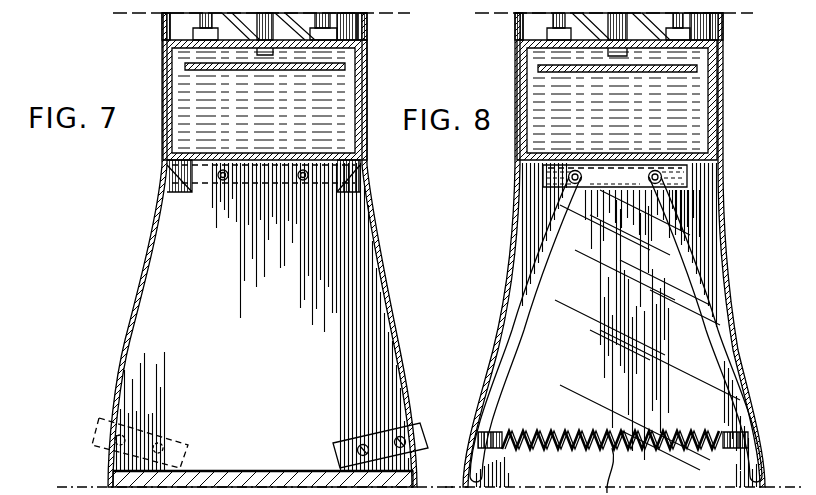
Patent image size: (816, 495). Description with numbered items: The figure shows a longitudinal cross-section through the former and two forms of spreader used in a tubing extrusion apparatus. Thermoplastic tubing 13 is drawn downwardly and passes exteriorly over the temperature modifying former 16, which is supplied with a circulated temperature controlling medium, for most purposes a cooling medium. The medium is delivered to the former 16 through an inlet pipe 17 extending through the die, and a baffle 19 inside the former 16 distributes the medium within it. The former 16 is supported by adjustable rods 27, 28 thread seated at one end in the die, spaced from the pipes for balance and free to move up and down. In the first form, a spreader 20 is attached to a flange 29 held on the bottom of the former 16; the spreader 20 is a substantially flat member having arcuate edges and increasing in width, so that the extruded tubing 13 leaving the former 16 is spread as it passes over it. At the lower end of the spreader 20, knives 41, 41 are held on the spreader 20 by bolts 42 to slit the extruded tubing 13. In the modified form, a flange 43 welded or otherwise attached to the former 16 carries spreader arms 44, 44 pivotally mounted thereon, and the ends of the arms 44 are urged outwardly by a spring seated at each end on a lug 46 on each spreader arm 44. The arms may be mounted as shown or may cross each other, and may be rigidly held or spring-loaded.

In FIG. 7, the thermoplastic tubing 13 is at (367, 200).
In FIG. 8, the thermoplastic tubing 13 is at (728, 250).
In FIG. 7, the temperature modifying former 16 is at (360, 93).
In FIG. 8, the temperature modifying former 16 is at (708, 103).
In FIG. 7, the inlet pipe 17 is at (266, 30).
In FIG. 8, the inlet pipe 17 is at (612, 25).
In FIG. 7, the baffle 19 is at (345, 62).
In FIG. 8, the baffle 19 is at (540, 70).
In FIG. 7, the spreader 20 is at (157, 289).
In FIG. 7, the adjustable rod 27 is at (206, 22).
In FIG. 8, the adjustable rod 27 is at (557, 22).
In FIG. 7, the adjustable rod 28 is at (364, 22).
In FIG. 8, the adjustable rod 28 is at (720, 25).
In FIG. 7, the flange 29 is at (205, 165).
In FIG. 7, the knife 41 is at (92, 437).
In FIG. 7, the bolt 42 is at (160, 450).
In FIG. 8, the flange 43 is at (680, 176).
In FIG. 8, the spreader arm 44 is at (515, 315).
In FIG. 8, the lug 46 is at (490, 430).